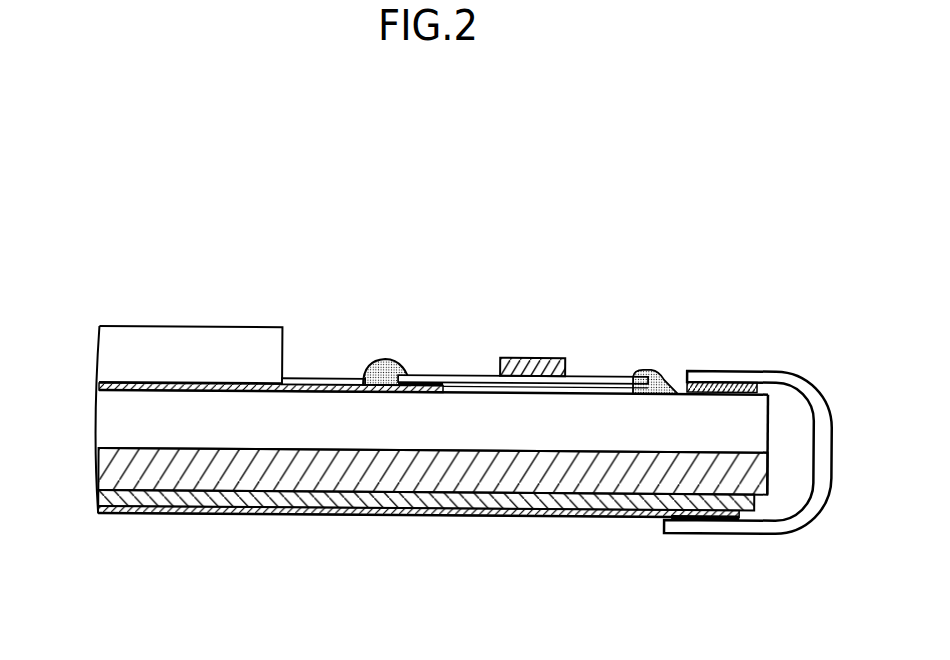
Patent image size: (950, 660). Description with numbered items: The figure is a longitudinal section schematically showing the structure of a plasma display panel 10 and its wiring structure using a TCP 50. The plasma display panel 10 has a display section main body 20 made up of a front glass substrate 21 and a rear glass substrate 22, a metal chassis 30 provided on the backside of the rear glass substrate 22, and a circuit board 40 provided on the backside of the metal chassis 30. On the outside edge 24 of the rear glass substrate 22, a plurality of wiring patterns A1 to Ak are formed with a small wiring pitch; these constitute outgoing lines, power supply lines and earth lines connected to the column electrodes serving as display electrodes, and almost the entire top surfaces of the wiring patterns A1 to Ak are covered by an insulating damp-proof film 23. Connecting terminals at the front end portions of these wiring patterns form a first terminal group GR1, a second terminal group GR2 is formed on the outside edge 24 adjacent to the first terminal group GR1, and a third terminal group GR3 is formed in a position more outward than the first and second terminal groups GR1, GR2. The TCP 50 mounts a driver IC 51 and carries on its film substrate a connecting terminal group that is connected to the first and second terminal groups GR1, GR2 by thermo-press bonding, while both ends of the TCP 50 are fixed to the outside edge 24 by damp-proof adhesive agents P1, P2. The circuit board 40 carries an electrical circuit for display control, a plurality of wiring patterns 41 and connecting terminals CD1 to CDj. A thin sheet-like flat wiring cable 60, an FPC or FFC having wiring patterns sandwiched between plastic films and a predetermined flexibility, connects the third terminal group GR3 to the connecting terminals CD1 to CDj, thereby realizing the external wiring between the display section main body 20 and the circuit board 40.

The plasma display panel 10 is at (283, 292).
The display section main body 20 is at (68, 326).
The front glass substrate 21 is at (128, 361).
The rear glass substrate 22 is at (128, 426).
The insulating damp-proof film 23 is at (323, 377).
The outside edge 24 is at (480, 434).
The metal chassis 30 is at (108, 478).
The circuit board 40 is at (107, 511).
The wiring patterns 41 is at (599, 521).
The TCP 50 is at (476, 373).
The driver IC 51 is at (541, 355).
The flat wiring cable 60 is at (834, 447).
The damp-proof adhesive agent P1 is at (386, 358).
The damp-proof adhesive agent P2 is at (661, 367).
The first terminal group GR1 is at (438, 333).
The second terminal group GR2 is at (432, 381).
The third terminal group GR3 is at (728, 386).
The wiring pattern A1 is at (271, 410).
The wiring pattern Ak is at (322, 393).
The connecting terminal CD1 is at (736, 555).
The connecting terminal CDj is at (707, 521).